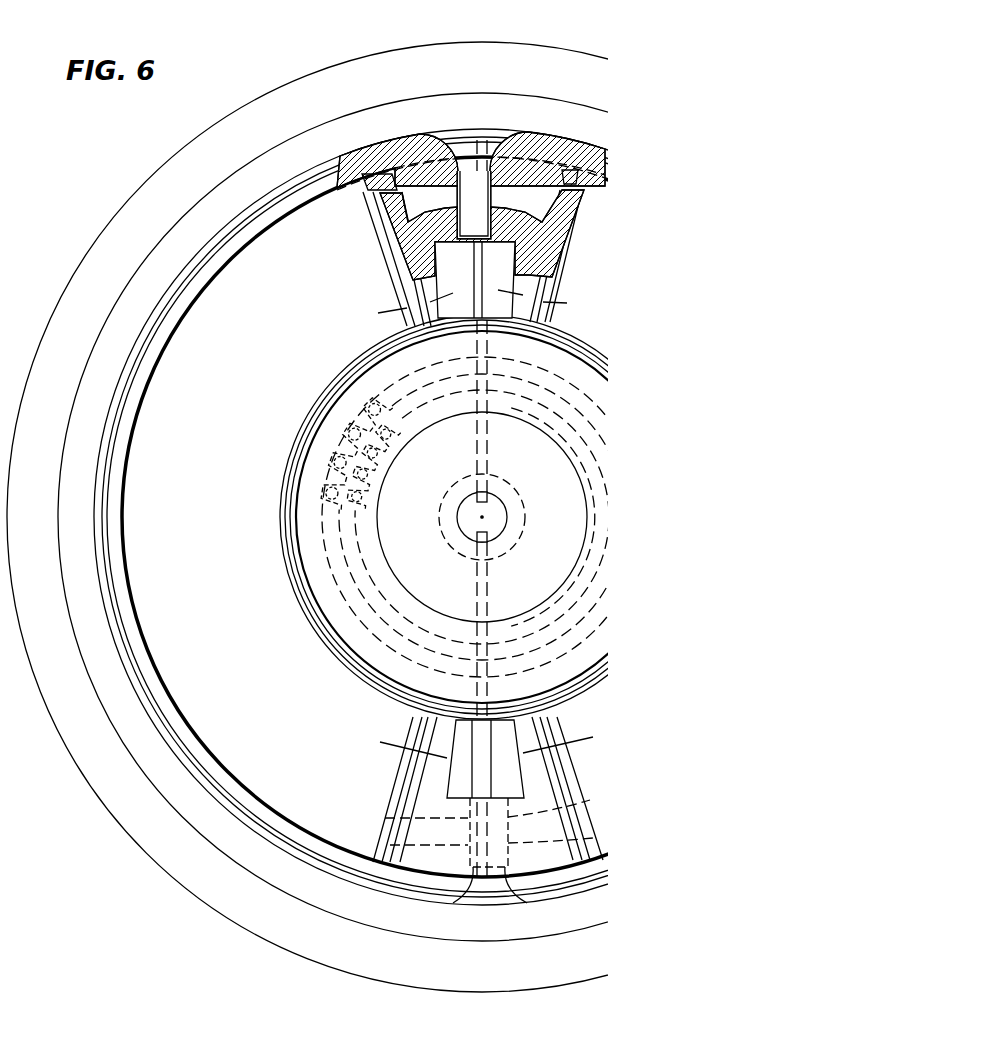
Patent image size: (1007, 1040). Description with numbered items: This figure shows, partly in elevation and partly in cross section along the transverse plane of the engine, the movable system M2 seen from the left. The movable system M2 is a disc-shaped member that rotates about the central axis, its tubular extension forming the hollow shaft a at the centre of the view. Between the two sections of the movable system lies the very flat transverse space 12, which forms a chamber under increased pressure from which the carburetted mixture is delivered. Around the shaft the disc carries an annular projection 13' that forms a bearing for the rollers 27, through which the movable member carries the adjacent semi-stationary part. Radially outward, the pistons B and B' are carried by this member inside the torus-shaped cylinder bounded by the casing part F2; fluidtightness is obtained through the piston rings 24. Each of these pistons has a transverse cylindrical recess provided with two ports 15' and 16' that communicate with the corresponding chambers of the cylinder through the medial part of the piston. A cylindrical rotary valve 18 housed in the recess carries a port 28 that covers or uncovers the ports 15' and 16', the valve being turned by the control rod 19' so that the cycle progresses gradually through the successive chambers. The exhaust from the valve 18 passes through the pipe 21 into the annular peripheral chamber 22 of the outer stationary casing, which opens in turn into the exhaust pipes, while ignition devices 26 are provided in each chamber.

The exhaust pipe 21 is at (483, 137).
The valve port 28 is at (543, 148).
The piston ring 24 is at (372, 188).
The piston B is at (415, 264).
The transverse port 15' is at (380, 259).
The cylindrical rotary valve 18 is at (428, 276).
The transverse port 16' is at (573, 256).
The ignition device 26 is at (566, 304).
The movable system section M2 is at (323, 437).
The control rod 19' is at (446, 510).
The hollow shaft a is at (493, 516).
The roller 27 is at (332, 502).
The annular projection 13' is at (439, 517).
The flat transverse space 12 is at (407, 578).
The piston B' is at (456, 810).
The casing part F2 is at (278, 930).
The annular peripheral chamber 22 is at (348, 913).